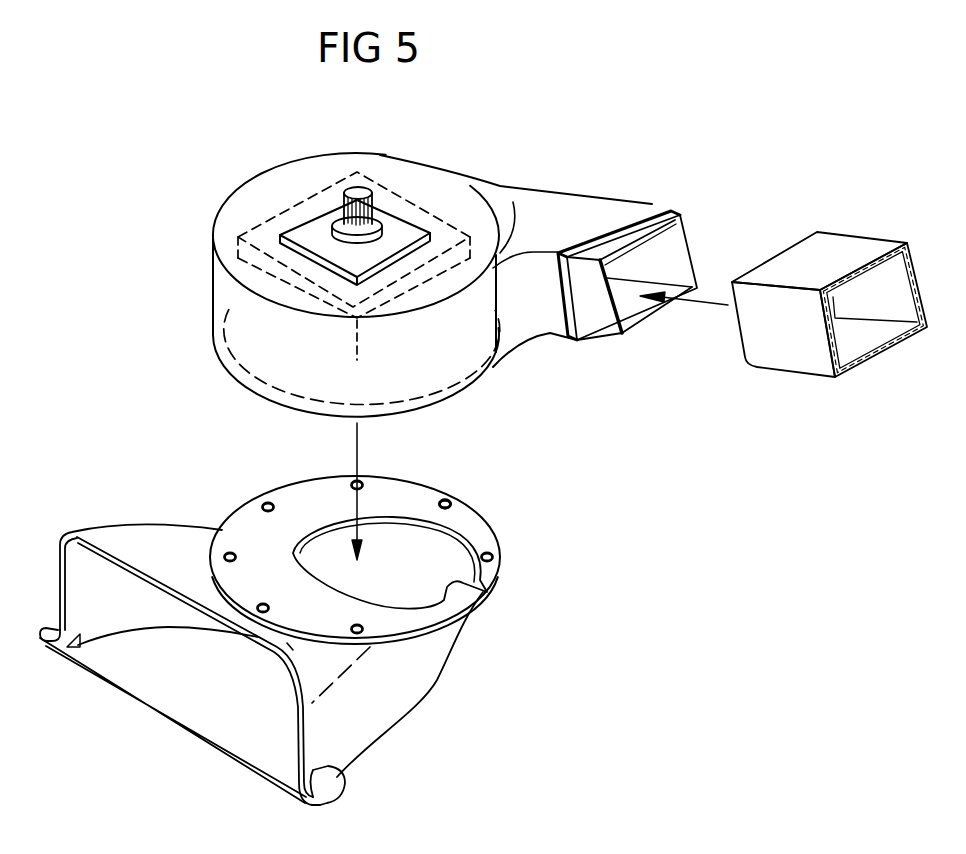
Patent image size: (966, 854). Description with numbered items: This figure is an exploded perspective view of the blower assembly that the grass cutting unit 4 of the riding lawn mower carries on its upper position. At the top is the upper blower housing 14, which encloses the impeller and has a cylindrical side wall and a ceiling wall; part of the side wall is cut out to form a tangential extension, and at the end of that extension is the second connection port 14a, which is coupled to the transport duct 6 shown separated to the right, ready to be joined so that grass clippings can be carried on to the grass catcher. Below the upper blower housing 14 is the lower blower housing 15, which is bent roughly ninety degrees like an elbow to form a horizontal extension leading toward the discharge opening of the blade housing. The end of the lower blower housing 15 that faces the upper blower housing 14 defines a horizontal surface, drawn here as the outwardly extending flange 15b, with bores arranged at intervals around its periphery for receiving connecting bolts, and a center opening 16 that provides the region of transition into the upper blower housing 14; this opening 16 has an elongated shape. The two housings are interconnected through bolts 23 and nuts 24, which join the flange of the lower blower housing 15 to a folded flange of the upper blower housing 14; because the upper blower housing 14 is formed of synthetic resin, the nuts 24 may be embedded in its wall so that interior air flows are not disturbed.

The grass cutting unit 4 is at (288, 212).
The upper blower housing 14 is at (540, 190).
The second connection port 14a is at (665, 213).
The transport duct 6 is at (777, 363).
The lower blower housing 15 is at (145, 527).
The annular mounting flange 15b is at (482, 535).
The center opening 16 is at (487, 593).
The bolts 23 is at (446, 440).
The nuts 24 is at (444, 498).